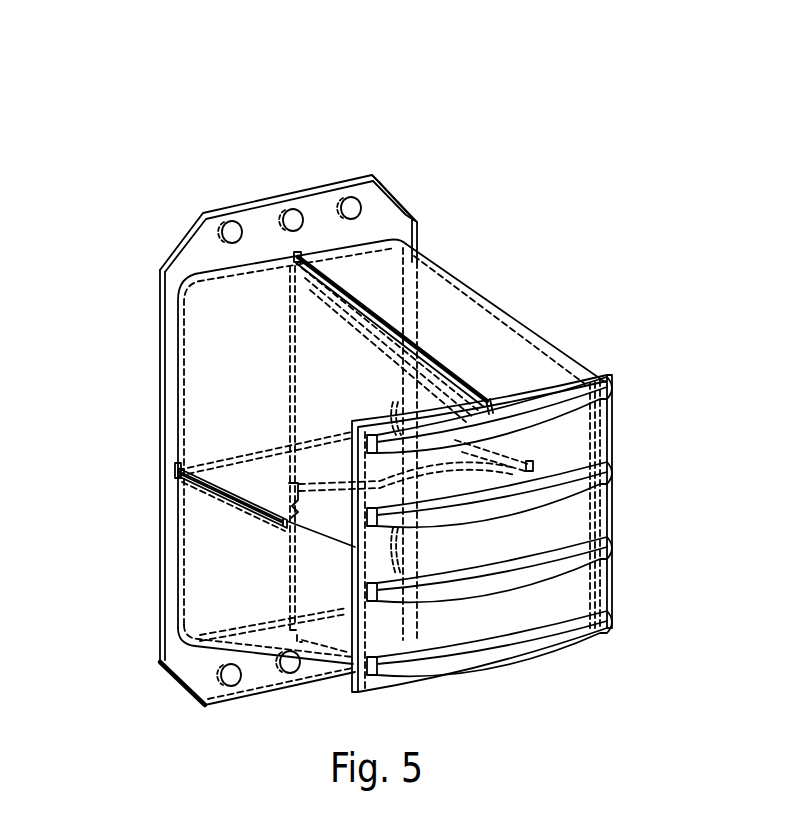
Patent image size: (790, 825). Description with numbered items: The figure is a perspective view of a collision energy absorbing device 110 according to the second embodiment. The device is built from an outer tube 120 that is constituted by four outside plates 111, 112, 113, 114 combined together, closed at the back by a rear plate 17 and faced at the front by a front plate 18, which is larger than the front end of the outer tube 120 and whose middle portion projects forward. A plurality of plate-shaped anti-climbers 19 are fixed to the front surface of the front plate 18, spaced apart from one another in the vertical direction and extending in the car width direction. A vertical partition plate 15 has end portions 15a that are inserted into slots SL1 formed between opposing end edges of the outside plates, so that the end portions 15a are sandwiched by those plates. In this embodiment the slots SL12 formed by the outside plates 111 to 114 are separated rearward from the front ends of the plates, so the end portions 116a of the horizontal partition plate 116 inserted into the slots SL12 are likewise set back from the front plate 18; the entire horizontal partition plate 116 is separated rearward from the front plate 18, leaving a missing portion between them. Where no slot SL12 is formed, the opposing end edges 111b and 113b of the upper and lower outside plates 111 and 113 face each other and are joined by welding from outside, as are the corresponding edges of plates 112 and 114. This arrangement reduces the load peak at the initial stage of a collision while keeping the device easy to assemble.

The collision energy absorbing device 110 is at (512, 115).
The rear plate 17 is at (185, 237).
The outside plate 111 is at (200, 323).
The end edge 111b is at (290, 482).
The outside plate 112 is at (445, 272).
The outside plate 113 is at (195, 588).
The end edge 113b is at (315, 522).
The outside plate 114 is at (573, 530).
The vertical partition plate 15 is at (386, 324).
The end portion 15a is at (367, 309).
The slot SL1 is at (322, 298).
The horizontal partition plate 116 is at (205, 486).
The end portion 116a is at (250, 501).
The slot SL12 is at (215, 458).
The front plate 18 is at (606, 373).
The anti-climber 19 is at (572, 428).
The outer tube 120 is at (505, 316).